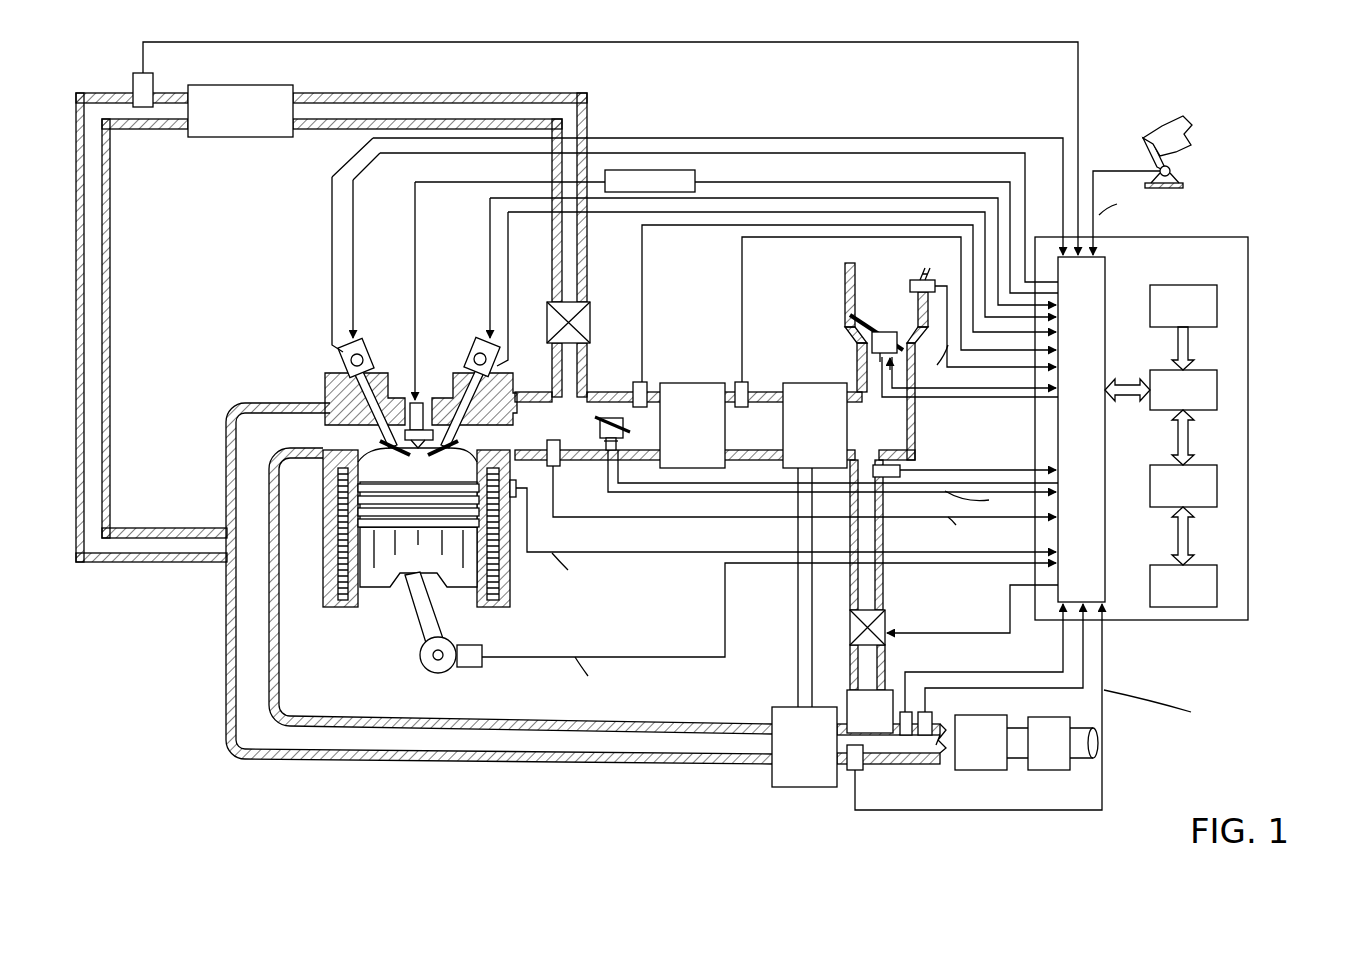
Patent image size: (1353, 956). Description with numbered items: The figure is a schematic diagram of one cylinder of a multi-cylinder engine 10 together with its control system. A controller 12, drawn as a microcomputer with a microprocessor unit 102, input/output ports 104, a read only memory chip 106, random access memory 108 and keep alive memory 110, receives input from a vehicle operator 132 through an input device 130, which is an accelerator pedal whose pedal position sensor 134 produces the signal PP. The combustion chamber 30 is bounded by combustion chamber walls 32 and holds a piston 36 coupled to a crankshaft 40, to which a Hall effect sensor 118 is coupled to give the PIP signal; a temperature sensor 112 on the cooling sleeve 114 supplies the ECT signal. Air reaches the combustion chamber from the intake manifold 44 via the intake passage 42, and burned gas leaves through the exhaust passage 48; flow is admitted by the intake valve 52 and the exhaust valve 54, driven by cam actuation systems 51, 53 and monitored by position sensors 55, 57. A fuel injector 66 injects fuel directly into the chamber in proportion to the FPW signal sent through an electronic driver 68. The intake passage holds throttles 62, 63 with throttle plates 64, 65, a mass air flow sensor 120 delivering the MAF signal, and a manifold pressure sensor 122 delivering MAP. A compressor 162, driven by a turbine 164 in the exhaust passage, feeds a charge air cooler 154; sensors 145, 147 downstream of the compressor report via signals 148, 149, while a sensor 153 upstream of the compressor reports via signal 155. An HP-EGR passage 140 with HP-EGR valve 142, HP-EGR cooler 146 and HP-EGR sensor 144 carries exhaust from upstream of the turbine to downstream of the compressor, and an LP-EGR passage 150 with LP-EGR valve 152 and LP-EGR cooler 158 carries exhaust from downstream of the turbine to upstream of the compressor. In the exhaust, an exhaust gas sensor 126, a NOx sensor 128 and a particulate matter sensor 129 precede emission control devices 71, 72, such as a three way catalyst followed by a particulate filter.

The engine 10 is at (262, 330).
The controller 12 is at (1248, 237).
The combustion chamber 30 is at (392, 480).
The combustion chamber walls 32 is at (360, 615).
The piston 36 is at (400, 590).
The crankshaft 40 is at (426, 672).
The intake passage 42 is at (886, 361).
The intake manifold 44 is at (715, 426).
The exhaust passage 48 is at (586, 583).
The cam actuation system 51 is at (470, 348).
The intake valve 52 is at (462, 452).
The cam actuation system 53 is at (360, 345).
The exhaust valve 54 is at (385, 445).
The position sensor 55 is at (500, 362).
The position sensor 57 is at (345, 360).
The throttle 62 is at (610, 416).
The throttle 63 is at (850, 318).
The throttle plate 64 is at (600, 427).
The throttle plate 65 is at (872, 342).
The fuel injector 66 is at (418, 400).
The electronic driver 68 is at (695, 182).
The emission control device 71 is at (991, 742).
The emission control device 72 is at (1063, 743).
The microprocessor unit 102 is at (1217, 392).
The input/output ports 104 is at (1108, 263).
The read only memory chip 106 is at (1217, 305).
The random access memory 108 is at (1217, 487).
The keep alive memory 110 is at (1217, 585).
The temperature sensor 112 is at (516, 497).
The cooling sleeve 114 is at (506, 590).
The Hall effect sensor 118 is at (468, 670).
The mass air flow sensor 120 is at (915, 280).
The manifold pressure sensor 122 is at (547, 442).
The exhaust gas sensor 126 is at (863, 770).
The NOx sensor 128 is at (906, 736).
The particulate matter sensor 129 is at (932, 718).
The input device 130 is at (1150, 145).
The vehicle operator 132 is at (1196, 125).
The pedal position sensor 134 is at (1175, 172).
The HP-EGR passage 140 is at (490, 93).
The HP-EGR valve 142 is at (591, 325).
The HP-EGR sensor 144 is at (143, 73).
The sensor 145 is at (748, 385).
The HP-EGR cooler 146 is at (240, 111).
The sensor 147 is at (647, 385).
The signal 148 is at (742, 300).
The signal 149 is at (642, 300).
The LP-EGR passage 150 is at (884, 595).
The LP-EGR valve 152 is at (850, 628).
The sensor 153 is at (878, 465).
The signal 155 is at (935, 470).
The charge air cooler 154 is at (692, 425).
The LP-EGR cooler 158 is at (870, 711).
The compressor 162 is at (815, 545).
The turbine 164 is at (804, 747).